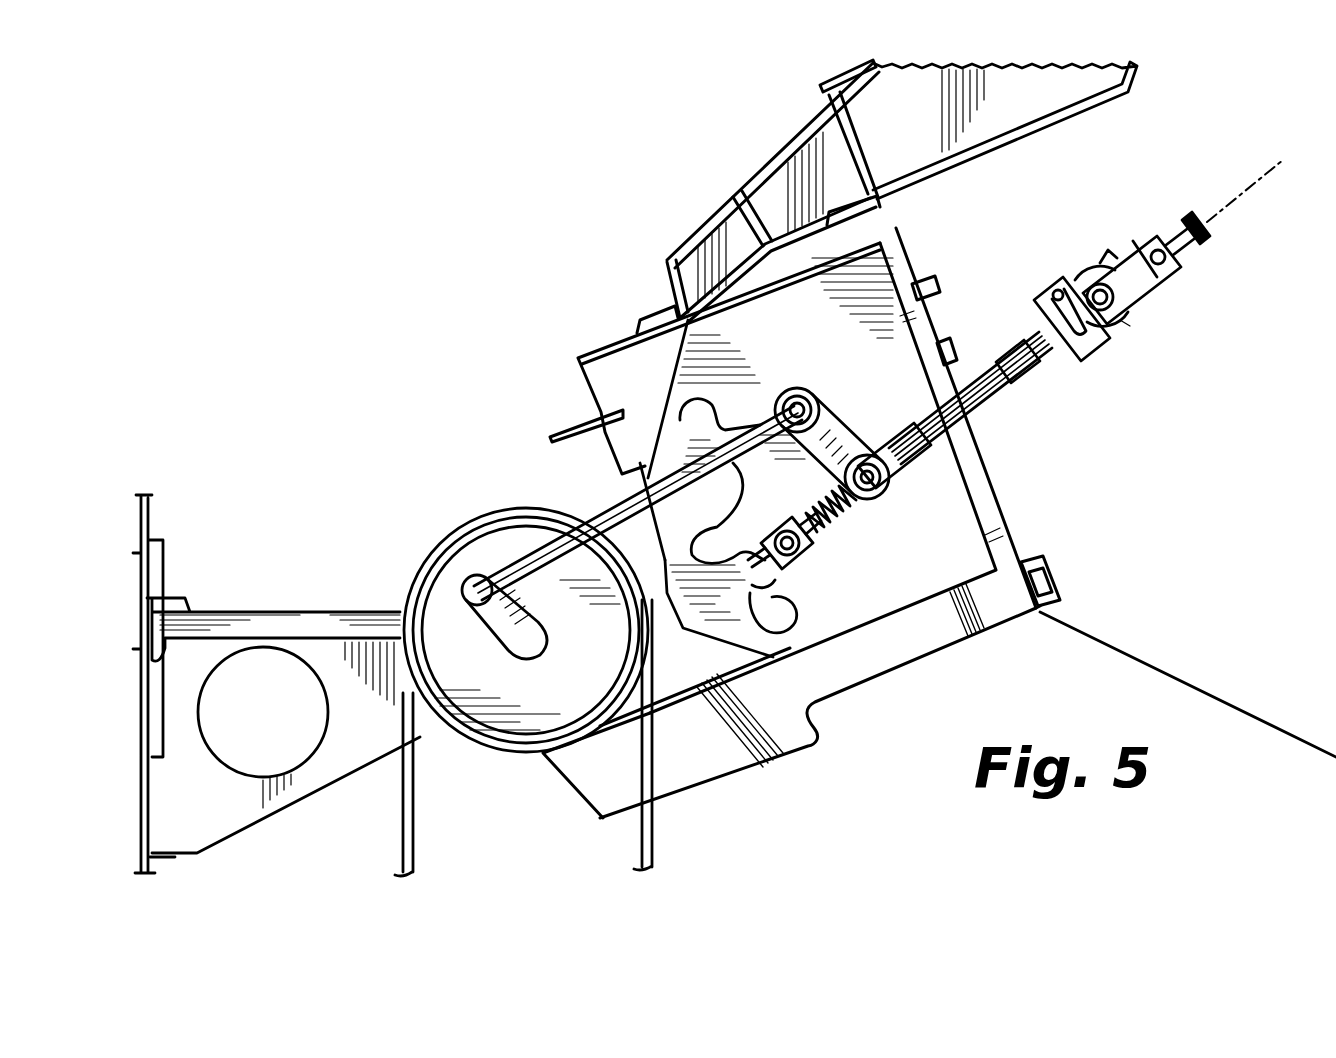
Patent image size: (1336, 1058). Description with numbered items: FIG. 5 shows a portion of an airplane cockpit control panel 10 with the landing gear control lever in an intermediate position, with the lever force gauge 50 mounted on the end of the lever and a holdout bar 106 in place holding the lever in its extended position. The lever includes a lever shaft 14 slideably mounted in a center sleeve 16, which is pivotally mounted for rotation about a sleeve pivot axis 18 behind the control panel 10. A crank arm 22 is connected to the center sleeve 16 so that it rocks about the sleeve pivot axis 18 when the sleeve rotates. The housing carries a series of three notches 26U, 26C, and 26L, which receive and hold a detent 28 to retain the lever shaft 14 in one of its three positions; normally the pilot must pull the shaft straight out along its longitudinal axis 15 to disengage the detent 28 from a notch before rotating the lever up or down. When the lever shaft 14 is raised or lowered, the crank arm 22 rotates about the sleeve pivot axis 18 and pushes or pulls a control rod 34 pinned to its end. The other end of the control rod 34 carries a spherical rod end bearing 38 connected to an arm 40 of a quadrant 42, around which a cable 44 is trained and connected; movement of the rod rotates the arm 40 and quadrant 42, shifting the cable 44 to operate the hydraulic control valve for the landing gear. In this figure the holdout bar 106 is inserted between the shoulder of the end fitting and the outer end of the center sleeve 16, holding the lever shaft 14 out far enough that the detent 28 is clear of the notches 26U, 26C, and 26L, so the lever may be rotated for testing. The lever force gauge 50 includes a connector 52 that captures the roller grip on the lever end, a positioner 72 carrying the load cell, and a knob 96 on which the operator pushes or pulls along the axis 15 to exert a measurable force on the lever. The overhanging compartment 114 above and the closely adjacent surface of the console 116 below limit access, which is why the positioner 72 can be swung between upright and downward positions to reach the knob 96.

The airplane cockpit control panel 10 is at (1032, 478).
The lever shaft 14 is at (993, 400).
The longitudinal axis 15 is at (1253, 183).
The center sleeve 16 is at (925, 462).
The sleeve pivot axis 18 is at (882, 494).
The crank arm 22 is at (833, 438).
The upper notch 26U is at (697, 428).
The center notch 26C is at (742, 513).
The lower notch 26L is at (792, 648).
The detent 28 is at (800, 563).
The control rod 34 is at (610, 503).
The spherical rod end bearing 38 is at (472, 588).
The arm 40 is at (485, 636).
The quadrant 42 is at (508, 543).
The cable 44 is at (652, 828).
The lever force gauge 50 is at (1132, 335).
The connector 52 is at (1103, 348).
The positioner 72 is at (1122, 244).
The knob 96 is at (1208, 242).
The holdout bar 106 is at (1007, 338).
The overhanging compartment 114 is at (1050, 128).
The console 116 is at (1140, 656).